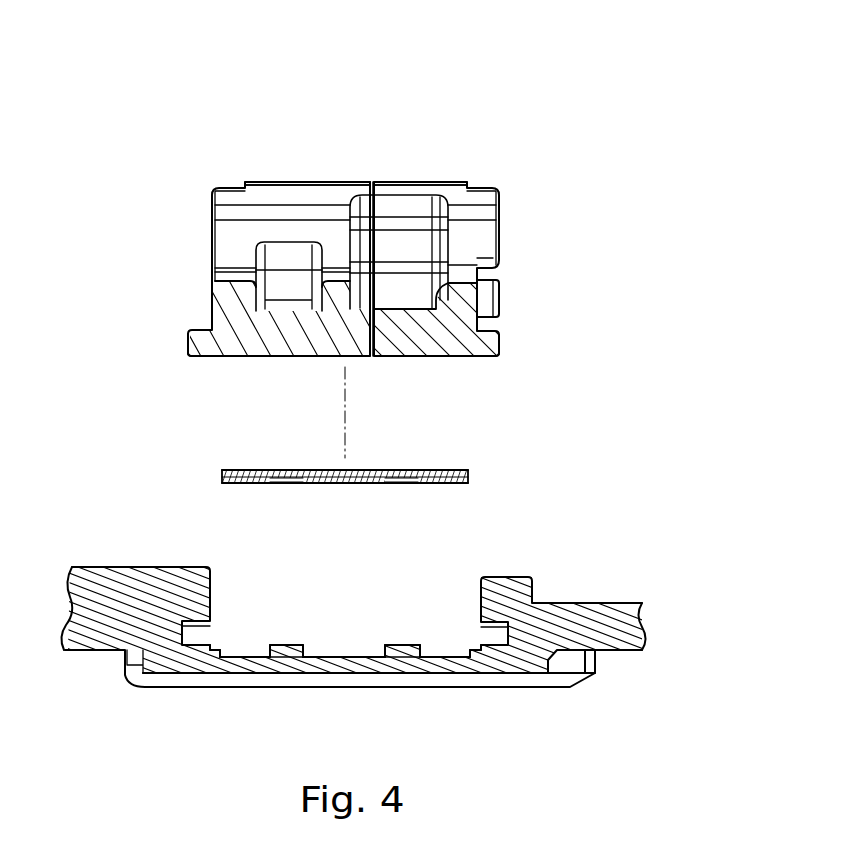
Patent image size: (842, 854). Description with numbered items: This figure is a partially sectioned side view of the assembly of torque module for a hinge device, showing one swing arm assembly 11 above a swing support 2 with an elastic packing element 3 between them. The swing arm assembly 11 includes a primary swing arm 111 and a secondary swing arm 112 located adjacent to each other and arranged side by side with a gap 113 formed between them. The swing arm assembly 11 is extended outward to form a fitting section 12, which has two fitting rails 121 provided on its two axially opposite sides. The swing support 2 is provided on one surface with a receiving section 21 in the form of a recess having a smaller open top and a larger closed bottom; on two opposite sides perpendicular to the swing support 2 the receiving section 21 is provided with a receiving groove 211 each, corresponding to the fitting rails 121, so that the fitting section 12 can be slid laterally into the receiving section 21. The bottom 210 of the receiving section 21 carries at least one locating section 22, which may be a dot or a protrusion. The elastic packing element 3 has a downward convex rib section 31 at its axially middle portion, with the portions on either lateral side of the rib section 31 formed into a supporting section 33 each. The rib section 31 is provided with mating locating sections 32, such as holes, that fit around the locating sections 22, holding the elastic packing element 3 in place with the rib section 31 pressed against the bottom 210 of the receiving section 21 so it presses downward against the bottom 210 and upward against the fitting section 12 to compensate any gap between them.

The swing support 2 is at (122, 567).
The elastic packing element 3 is at (492, 460).
The swing arm assembly 11 is at (337, 64).
The fitting section 12 is at (322, 382).
The receiving section 21 is at (318, 622).
The locating section 22 is at (280, 645).
The rib section 31 is at (448, 483).
The mating locating section 32 is at (400, 484).
The supporting section 33 is at (436, 470).
The primary swing arm 111 is at (410, 182).
The secondary swing arm 112 is at (315, 182).
The gap 113 is at (374, 182).
The fitting rail 121 is at (187, 337).
The bottom 210 is at (330, 657).
The receiving groove 211 is at (207, 637).